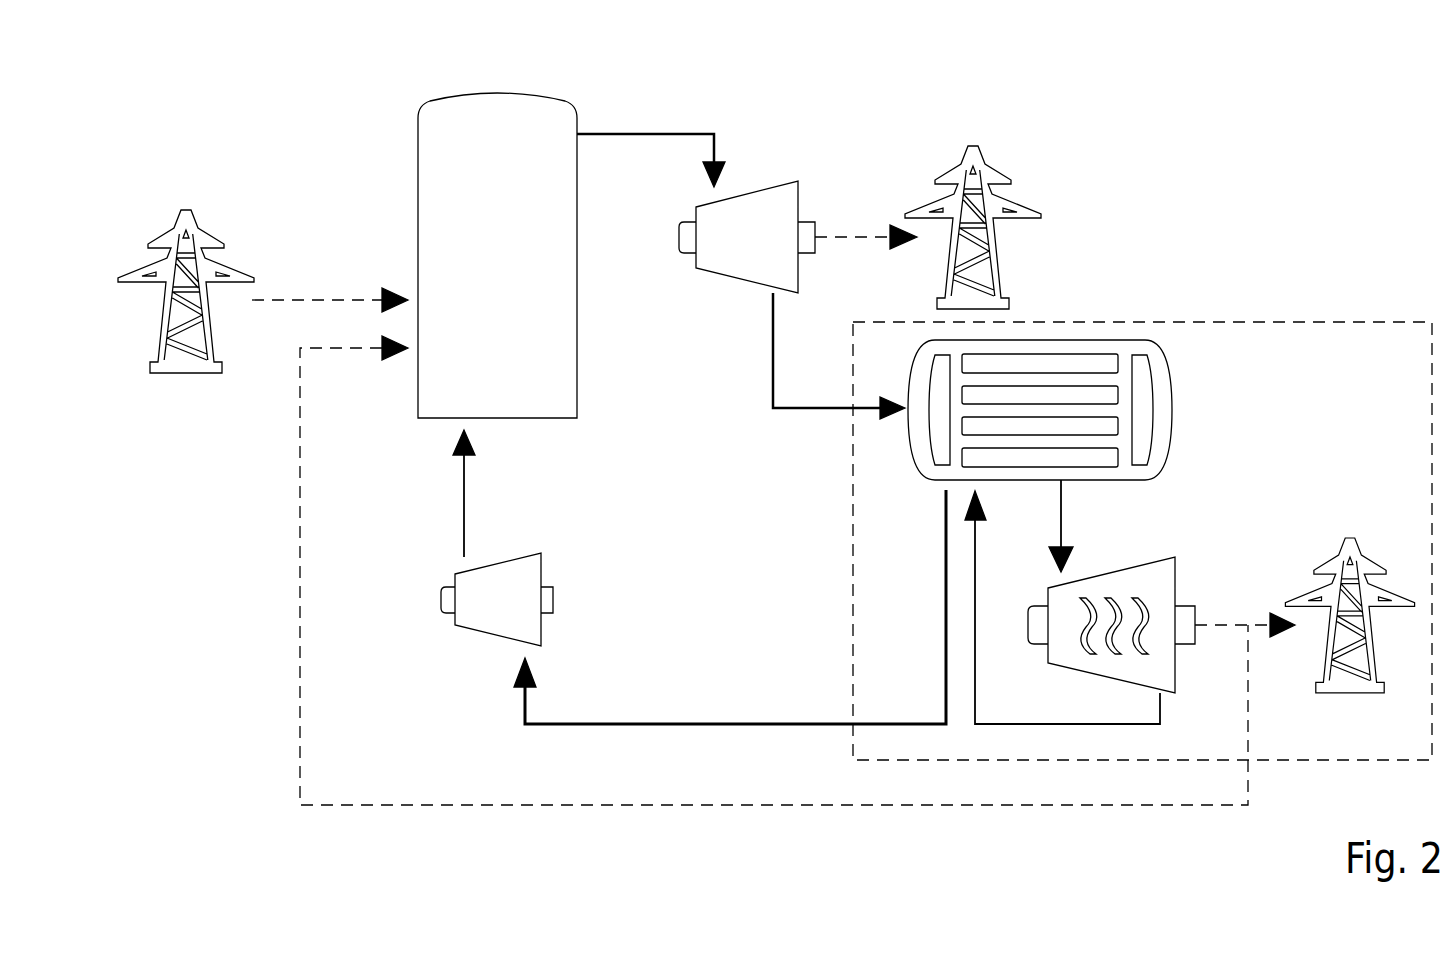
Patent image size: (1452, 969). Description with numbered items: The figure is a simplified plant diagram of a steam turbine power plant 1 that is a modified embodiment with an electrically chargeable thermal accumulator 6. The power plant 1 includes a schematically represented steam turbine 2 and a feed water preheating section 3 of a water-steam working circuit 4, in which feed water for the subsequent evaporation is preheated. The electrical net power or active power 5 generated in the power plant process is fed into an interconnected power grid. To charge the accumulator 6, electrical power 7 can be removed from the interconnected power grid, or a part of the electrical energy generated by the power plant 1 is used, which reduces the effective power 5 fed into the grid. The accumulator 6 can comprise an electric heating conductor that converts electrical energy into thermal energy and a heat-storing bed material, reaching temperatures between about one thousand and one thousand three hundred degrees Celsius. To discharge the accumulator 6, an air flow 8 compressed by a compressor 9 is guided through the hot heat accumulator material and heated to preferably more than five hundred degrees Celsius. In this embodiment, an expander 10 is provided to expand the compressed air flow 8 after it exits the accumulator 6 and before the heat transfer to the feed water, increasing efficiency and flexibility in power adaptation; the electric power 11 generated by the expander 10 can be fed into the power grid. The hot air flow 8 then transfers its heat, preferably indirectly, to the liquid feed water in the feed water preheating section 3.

The steam turbine power plant 1 is at (1130, 83).
The steam turbine 2 is at (1150, 577).
The feed water preheating section 3 is at (1128, 352).
The water-steam working circuit 4 is at (1030, 724).
The electrical net power 5 is at (1258, 605).
The electrically loadable thermal accumulator 6 is at (440, 170).
The electrical power 7 is at (300, 300).
The air flow 8 is at (650, 130).
The compressor 9 is at (510, 577).
The expander 10 is at (762, 200).
The electric power 11 is at (848, 237).